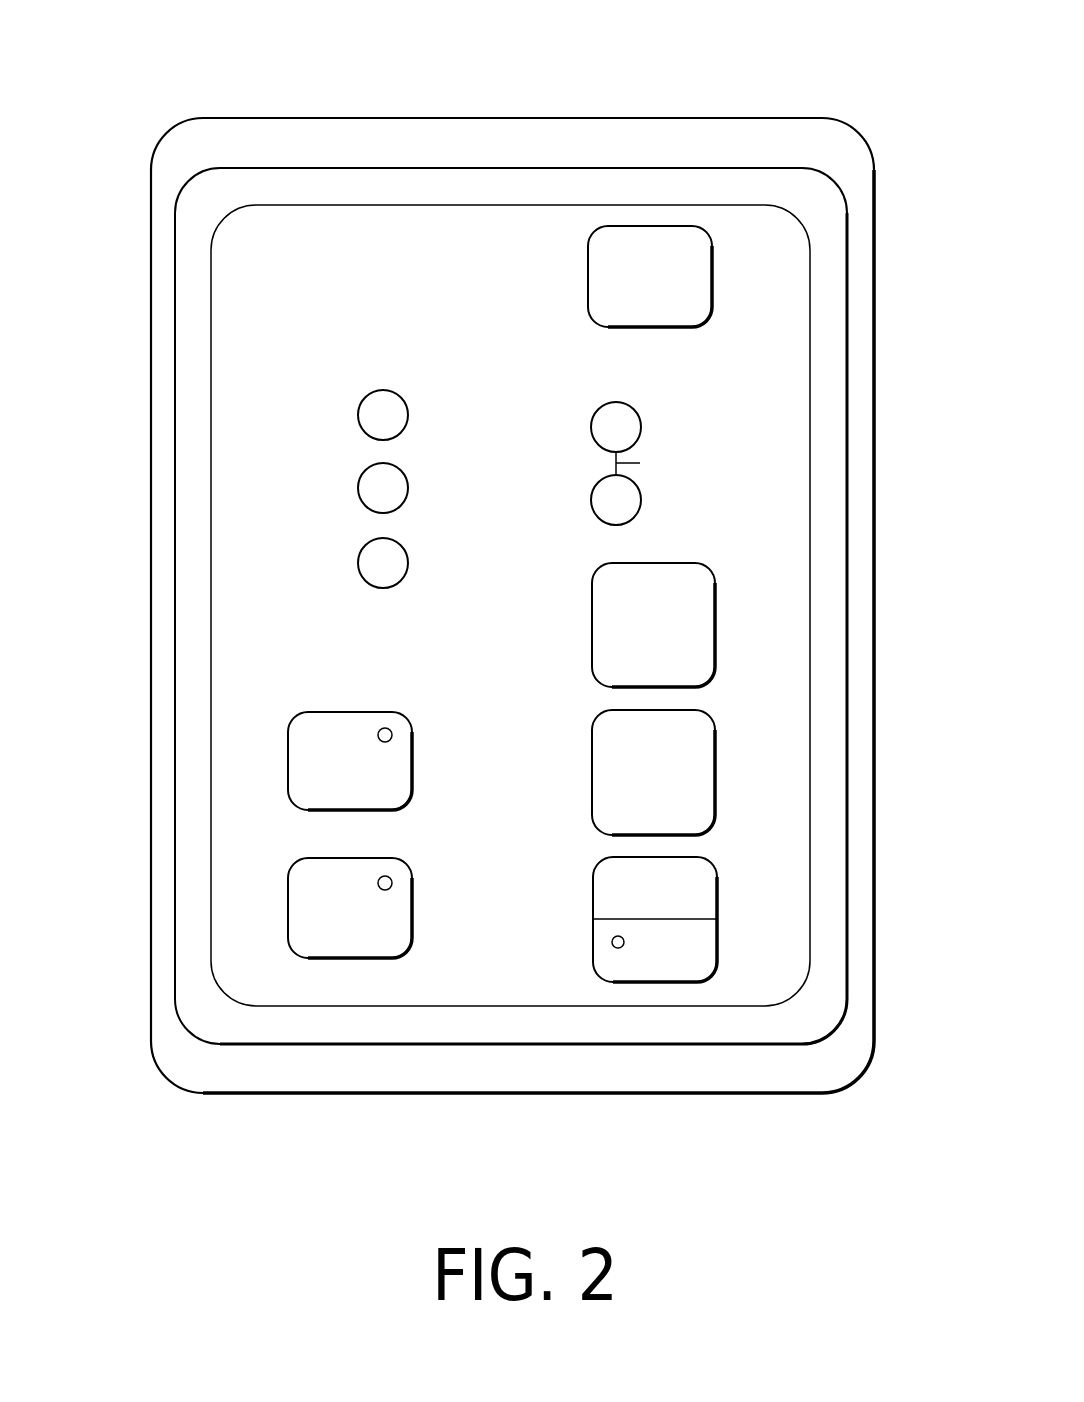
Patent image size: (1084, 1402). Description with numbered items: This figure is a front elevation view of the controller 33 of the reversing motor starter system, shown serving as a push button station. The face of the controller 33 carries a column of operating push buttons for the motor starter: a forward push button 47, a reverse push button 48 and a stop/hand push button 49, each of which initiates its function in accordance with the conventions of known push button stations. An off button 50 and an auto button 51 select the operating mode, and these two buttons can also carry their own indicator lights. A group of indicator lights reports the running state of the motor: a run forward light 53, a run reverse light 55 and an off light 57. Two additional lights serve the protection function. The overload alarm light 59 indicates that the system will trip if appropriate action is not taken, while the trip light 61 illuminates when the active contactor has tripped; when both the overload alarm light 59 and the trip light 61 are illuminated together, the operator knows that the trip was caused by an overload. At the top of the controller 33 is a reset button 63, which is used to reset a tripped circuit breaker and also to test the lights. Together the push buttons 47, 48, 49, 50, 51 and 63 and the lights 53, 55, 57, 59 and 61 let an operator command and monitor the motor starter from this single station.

The controller 33 is at (722, 108).
The forward push button 47 is at (704, 657).
The reverse push button 48 is at (702, 778).
The stop/hand push button 49 is at (705, 898).
The off button 50 is at (413, 757).
The auto button 51 is at (413, 945).
The run forward light 53 is at (402, 423).
The run reverse light 55 is at (395, 511).
The off light 57 is at (400, 583).
The overload alarm light 59 is at (601, 412).
The trip light 61 is at (600, 511).
The reset button 63 is at (708, 315).